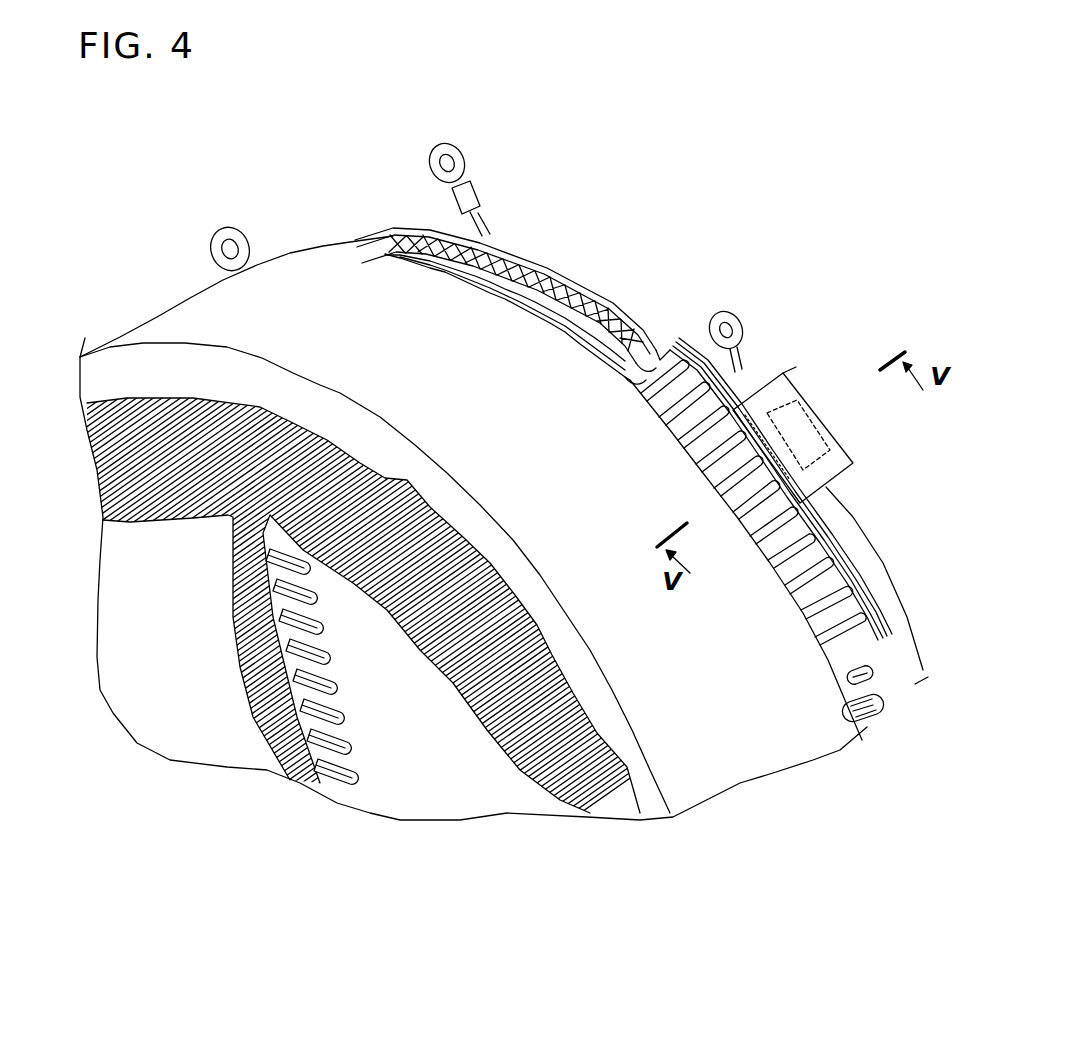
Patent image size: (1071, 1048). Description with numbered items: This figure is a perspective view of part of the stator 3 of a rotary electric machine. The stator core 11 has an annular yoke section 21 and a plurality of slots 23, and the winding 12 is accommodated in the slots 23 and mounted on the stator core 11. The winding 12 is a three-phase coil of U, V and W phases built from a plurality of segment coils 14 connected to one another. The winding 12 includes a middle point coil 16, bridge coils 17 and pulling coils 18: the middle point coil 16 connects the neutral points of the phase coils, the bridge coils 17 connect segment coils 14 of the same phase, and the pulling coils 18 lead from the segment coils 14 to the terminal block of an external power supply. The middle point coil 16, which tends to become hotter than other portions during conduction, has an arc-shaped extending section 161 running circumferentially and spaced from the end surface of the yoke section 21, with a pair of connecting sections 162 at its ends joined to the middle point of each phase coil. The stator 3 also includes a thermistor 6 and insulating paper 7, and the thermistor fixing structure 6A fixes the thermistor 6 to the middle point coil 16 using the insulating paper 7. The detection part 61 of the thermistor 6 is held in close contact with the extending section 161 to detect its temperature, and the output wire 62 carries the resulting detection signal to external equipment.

The stator 3 is at (309, 188).
The stator core 11 is at (183, 292).
The winding 12 is at (406, 208).
The segment coil 14 is at (875, 722).
The middle point coil 16 is at (744, 377).
The extending section 161 is at (870, 590).
The connecting section 162 is at (657, 347).
The bridge coil 17 is at (583, 300).
The pulling coil 18 is at (229, 228).
The yoke section 21 is at (628, 727).
The slot 23 is at (583, 697).
The thermistor 6 is at (859, 542).
The thermistor fixing structure 6A is at (830, 396).
The detection part 61 is at (815, 420).
The output wire 62 is at (877, 571).
The insulating paper 7 is at (811, 382).